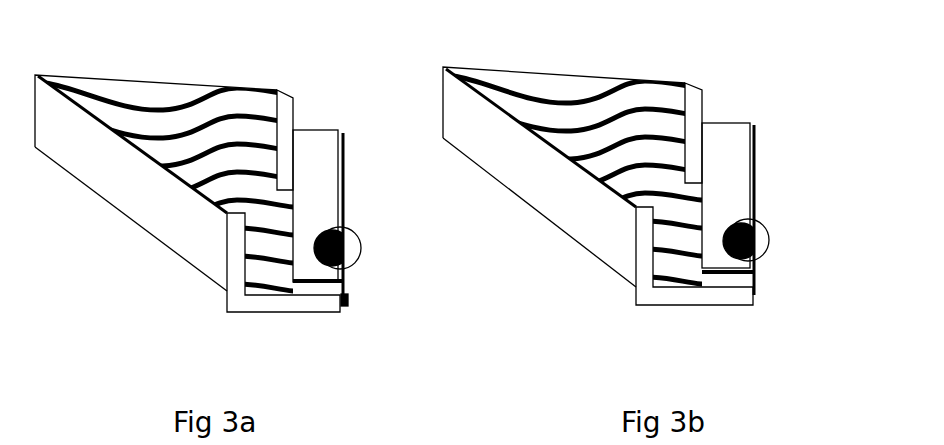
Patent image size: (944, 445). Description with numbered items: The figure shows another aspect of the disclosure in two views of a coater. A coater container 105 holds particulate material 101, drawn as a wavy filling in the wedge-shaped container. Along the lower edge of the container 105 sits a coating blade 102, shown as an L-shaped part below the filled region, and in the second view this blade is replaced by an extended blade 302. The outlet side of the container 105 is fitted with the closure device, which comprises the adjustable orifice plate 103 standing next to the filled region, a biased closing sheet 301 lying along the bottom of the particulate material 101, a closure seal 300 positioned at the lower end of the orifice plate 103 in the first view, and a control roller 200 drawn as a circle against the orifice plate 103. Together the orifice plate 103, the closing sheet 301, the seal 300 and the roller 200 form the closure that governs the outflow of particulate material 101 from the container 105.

In FIG. 3A, the particulate material 101 is at (200, 92).
In FIG. 3A, the coating blade 102 is at (285, 303).
In FIG. 3A, the adjustable orifice plate 103 is at (315, 132).
In FIG. 3A, the coater container 105 is at (145, 205).
In FIG. 3A, the control roller 200 is at (358, 248).
In FIG. 3B, the control roller 200 is at (766, 248).
In FIG. 3A, the closure seal 300 is at (350, 301).
In FIG. 3A, the biased closing sheet 301 is at (349, 279).
In FIG. 3B, the biased closing sheet 301 is at (759, 272).
In FIG. 3B, the extended blade 302 is at (692, 297).